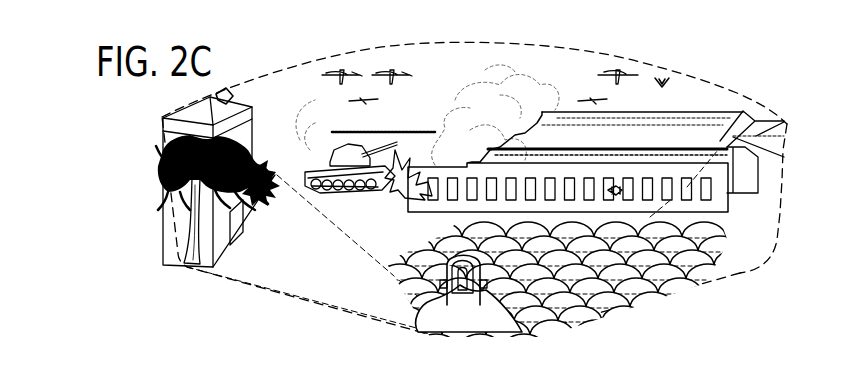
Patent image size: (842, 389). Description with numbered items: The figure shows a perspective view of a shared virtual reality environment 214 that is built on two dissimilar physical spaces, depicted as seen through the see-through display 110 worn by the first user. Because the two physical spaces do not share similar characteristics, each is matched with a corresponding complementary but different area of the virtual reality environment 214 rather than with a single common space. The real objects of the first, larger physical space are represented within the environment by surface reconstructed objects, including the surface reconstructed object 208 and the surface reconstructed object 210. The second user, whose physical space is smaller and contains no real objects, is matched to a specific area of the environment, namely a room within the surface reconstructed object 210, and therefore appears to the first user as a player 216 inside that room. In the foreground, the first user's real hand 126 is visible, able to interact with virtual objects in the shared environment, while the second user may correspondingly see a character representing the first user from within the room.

The see-through display 110 is at (564, 75).
The real hand 126 is at (500, 330).
The surface reconstructed object 208 is at (712, 244).
The surface reconstructed object 210 is at (408, 200).
The shared virtual reality environment 214 is at (248, 236).
The player 216 is at (622, 192).